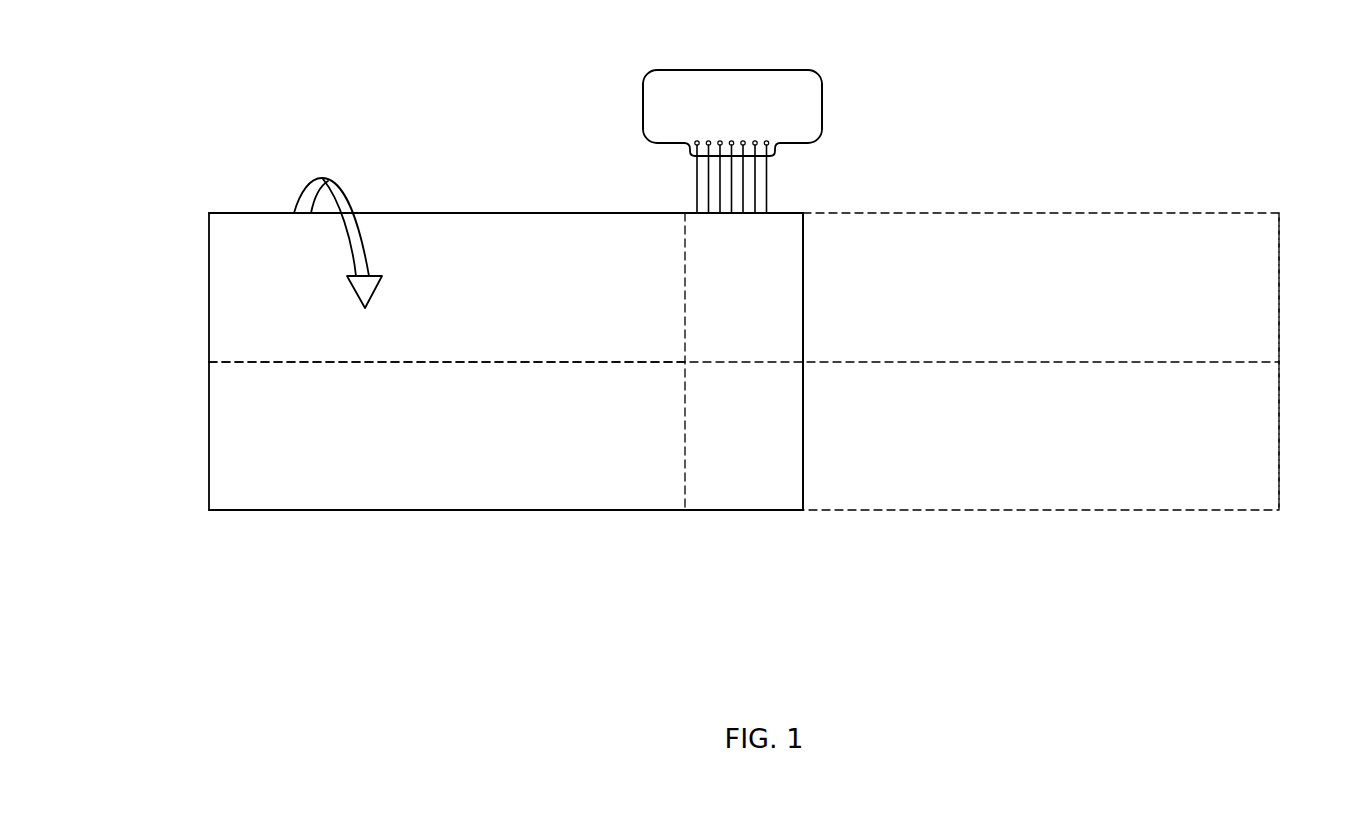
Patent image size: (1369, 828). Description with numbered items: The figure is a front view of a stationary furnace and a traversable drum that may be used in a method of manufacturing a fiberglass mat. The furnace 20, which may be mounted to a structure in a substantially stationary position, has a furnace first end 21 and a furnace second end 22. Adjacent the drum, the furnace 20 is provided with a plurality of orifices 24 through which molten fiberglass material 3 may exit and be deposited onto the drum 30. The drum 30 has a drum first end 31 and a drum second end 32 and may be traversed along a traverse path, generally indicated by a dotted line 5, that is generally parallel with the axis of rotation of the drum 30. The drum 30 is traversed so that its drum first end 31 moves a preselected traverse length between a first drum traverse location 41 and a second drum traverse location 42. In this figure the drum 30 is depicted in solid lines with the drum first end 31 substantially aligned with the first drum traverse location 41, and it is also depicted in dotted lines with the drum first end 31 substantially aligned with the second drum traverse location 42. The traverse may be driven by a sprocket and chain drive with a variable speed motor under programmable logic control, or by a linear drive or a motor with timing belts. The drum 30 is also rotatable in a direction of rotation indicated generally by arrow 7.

The furnace 20 is at (843, 80).
The furnace first end 21 is at (643, 93).
The furnace second end 22 is at (822, 108).
The orifices 24 is at (757, 141).
The molten fiberglass material 3 is at (770, 180).
The arrow 7 is at (369, 243).
The traverse path 5 is at (502, 364).
The drum 30 is at (182, 493).
The drum first end 31 is at (209, 248).
The drum second end 32 is at (805, 467).
The first drum traverse location 41 is at (209, 357).
The second drum traverse location 42 is at (685, 430).